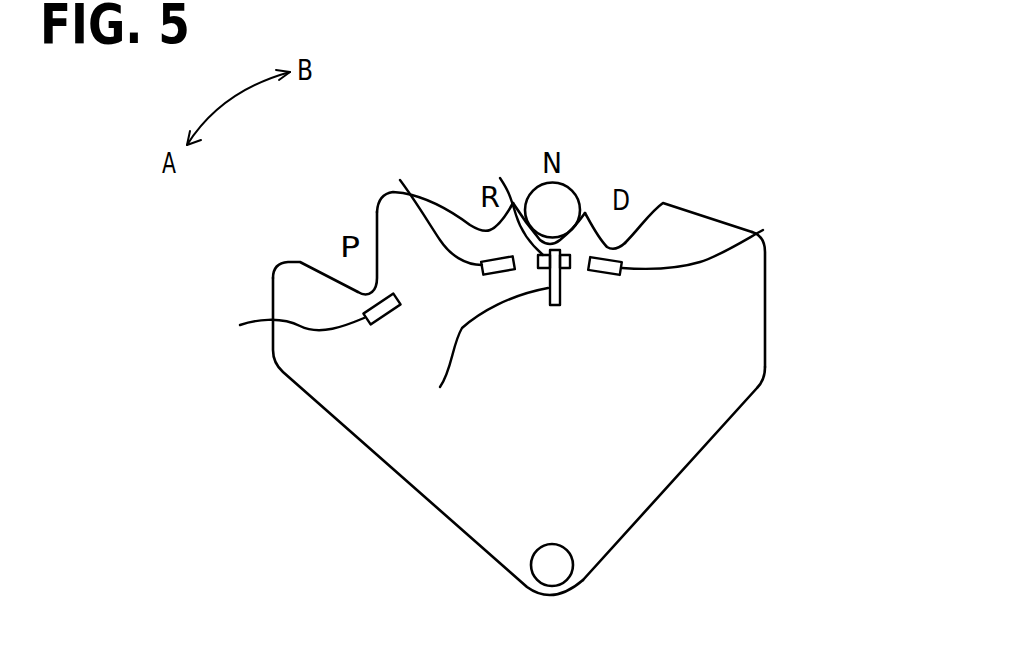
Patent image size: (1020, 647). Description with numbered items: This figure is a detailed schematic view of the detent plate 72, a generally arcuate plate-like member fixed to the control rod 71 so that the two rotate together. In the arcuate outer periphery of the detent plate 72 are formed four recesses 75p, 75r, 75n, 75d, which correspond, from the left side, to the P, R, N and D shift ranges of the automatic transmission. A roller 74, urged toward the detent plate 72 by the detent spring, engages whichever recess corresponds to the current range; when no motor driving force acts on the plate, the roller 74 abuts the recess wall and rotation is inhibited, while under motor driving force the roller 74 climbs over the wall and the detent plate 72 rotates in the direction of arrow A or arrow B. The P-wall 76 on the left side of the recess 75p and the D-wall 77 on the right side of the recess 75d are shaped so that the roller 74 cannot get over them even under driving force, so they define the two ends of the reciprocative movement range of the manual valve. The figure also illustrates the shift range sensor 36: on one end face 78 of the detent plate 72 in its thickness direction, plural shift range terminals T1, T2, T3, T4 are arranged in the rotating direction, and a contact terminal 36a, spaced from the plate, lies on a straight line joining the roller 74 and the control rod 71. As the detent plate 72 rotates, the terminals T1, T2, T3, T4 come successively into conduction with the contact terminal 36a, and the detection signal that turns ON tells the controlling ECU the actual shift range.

The shift range sensor 36 is at (378, 396).
The contact terminal 36a is at (440, 387).
The control rod 71 is at (555, 563).
The detent plate 72 is at (713, 435).
The roller 74 is at (540, 183).
The recess corresponding to P-range 75p is at (370, 287).
The recess corresponding to R-range 75r is at (487, 232).
The recess corresponding to N-range 75n is at (547, 243).
The recess corresponding to D-range 75d is at (607, 245).
The P-wall 76 is at (310, 250).
The D-wall 77 is at (643, 220).
The end face 78 is at (518, 351).
The shift range terminal T1 is at (240, 325).
The shift range terminal T2 is at (400, 180).
The shift range terminal T3 is at (500, 178).
The shift range terminal T4 is at (763, 230).